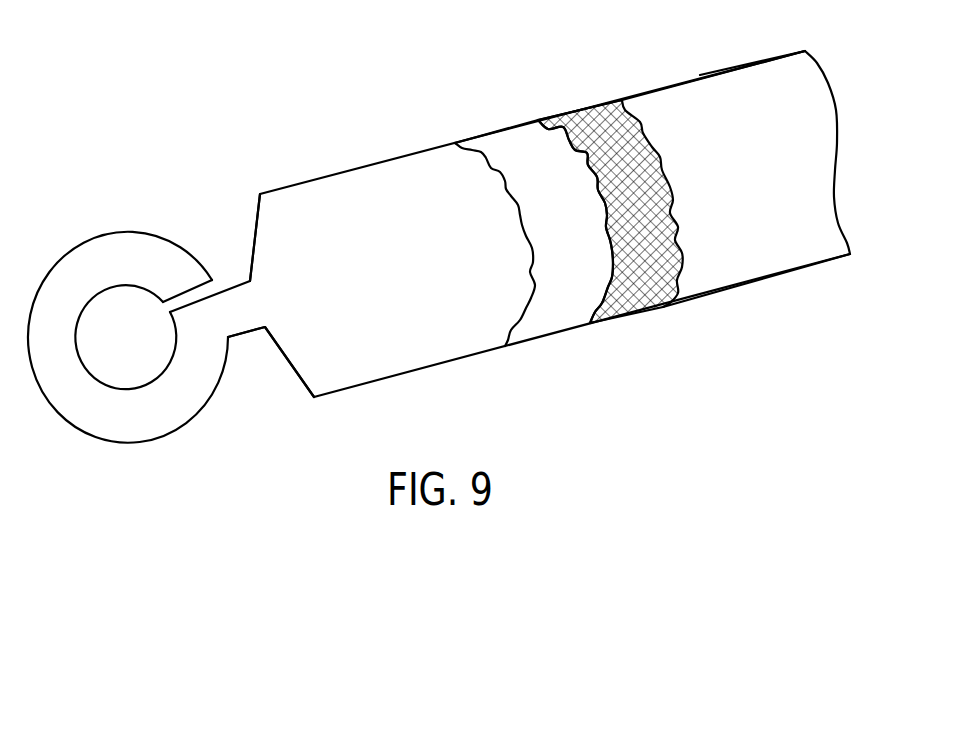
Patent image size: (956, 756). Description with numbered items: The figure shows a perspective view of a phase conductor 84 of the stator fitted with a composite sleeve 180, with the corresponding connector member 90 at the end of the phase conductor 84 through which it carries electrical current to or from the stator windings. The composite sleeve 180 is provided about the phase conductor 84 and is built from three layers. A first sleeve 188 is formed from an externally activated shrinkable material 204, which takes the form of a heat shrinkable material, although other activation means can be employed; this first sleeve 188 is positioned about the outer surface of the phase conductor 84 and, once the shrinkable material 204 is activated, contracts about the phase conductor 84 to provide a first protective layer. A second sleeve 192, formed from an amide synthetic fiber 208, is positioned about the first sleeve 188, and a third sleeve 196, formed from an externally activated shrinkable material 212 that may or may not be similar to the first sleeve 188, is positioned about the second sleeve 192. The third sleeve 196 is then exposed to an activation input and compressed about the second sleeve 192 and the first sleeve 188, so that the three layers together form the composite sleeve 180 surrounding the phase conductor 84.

The phase conductor 84 is at (446, 338).
The connector member 90 is at (164, 436).
The composite sleeve 180 is at (348, 58).
The first sleeve 188 is at (561, 312).
The second sleeve 192 is at (637, 288).
The third sleeve 196 is at (788, 252).
The externally activated shrinkable material 204 is at (510, 140).
The amide synthetic fiber 208 is at (637, 147).
The externally activated shrinkable material 212 is at (725, 83).